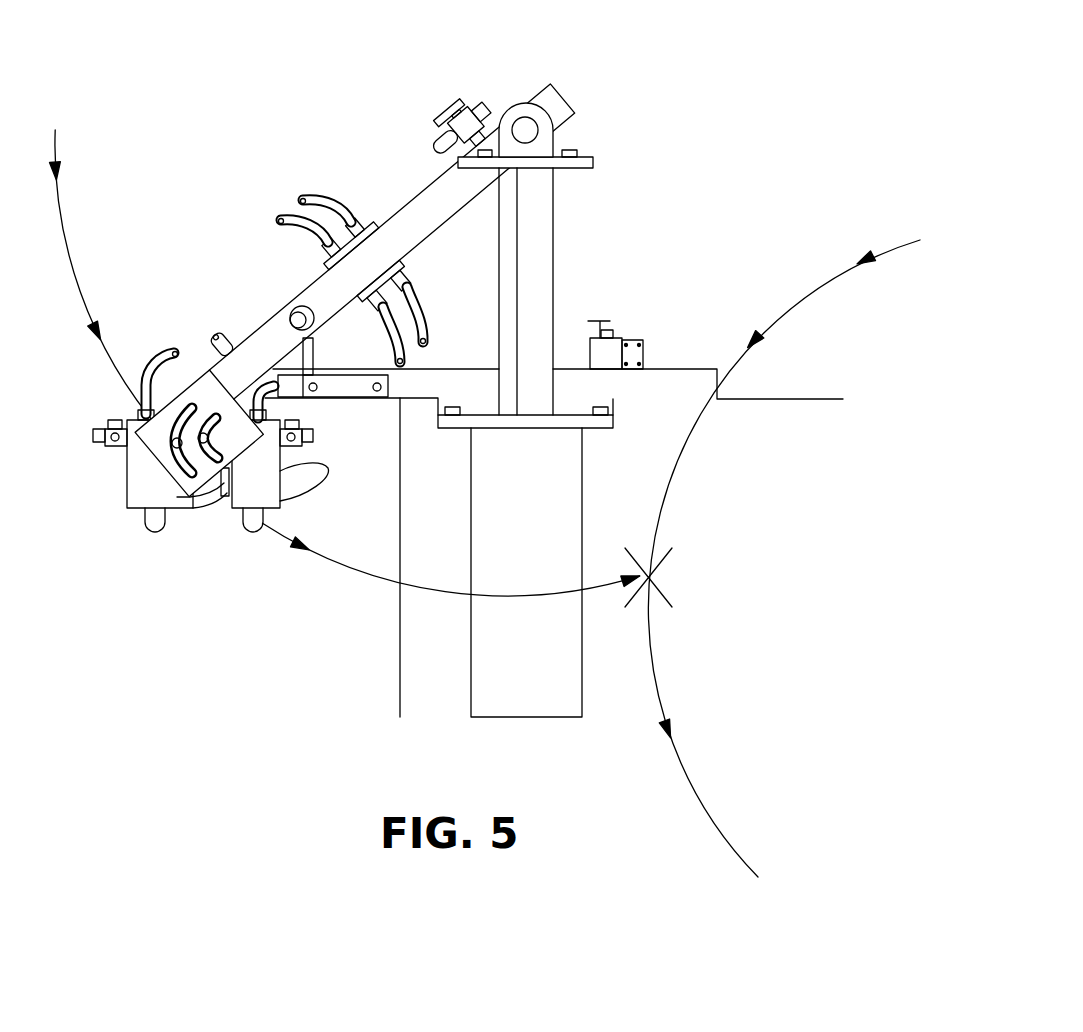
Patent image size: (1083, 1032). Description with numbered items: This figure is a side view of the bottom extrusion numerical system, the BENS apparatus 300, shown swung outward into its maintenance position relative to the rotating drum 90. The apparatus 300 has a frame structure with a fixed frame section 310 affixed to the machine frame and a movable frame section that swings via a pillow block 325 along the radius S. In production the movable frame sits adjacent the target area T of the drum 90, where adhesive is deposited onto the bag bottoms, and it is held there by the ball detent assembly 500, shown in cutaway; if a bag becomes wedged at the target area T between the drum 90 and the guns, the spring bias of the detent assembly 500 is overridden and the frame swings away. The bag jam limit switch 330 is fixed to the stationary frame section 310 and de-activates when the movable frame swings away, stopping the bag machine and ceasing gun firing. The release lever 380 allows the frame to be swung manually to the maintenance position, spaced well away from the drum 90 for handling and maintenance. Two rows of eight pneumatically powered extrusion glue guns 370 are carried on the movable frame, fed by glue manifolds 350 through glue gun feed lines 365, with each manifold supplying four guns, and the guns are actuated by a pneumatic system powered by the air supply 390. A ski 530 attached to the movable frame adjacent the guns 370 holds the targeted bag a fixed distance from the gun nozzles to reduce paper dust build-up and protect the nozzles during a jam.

The rotating drum 90 is at (813, 290).
The BENS apparatus 300 is at (489, 366).
The fixed frame section 310 is at (555, 232).
The pillow block 325 is at (527, 130).
The bag jam limit switch 330 is at (590, 310).
The glue manifolds 350 is at (330, 197).
The glue gun feed lines 365 is at (218, 336).
The extrusion glue guns 370 is at (221, 513).
The release lever 380 is at (318, 357).
The air supply 390 is at (470, 103).
The ball detent assembly 500 is at (298, 318).
The ski 530 is at (123, 492).
The radius S is at (342, 343).
The target area T is at (637, 575).